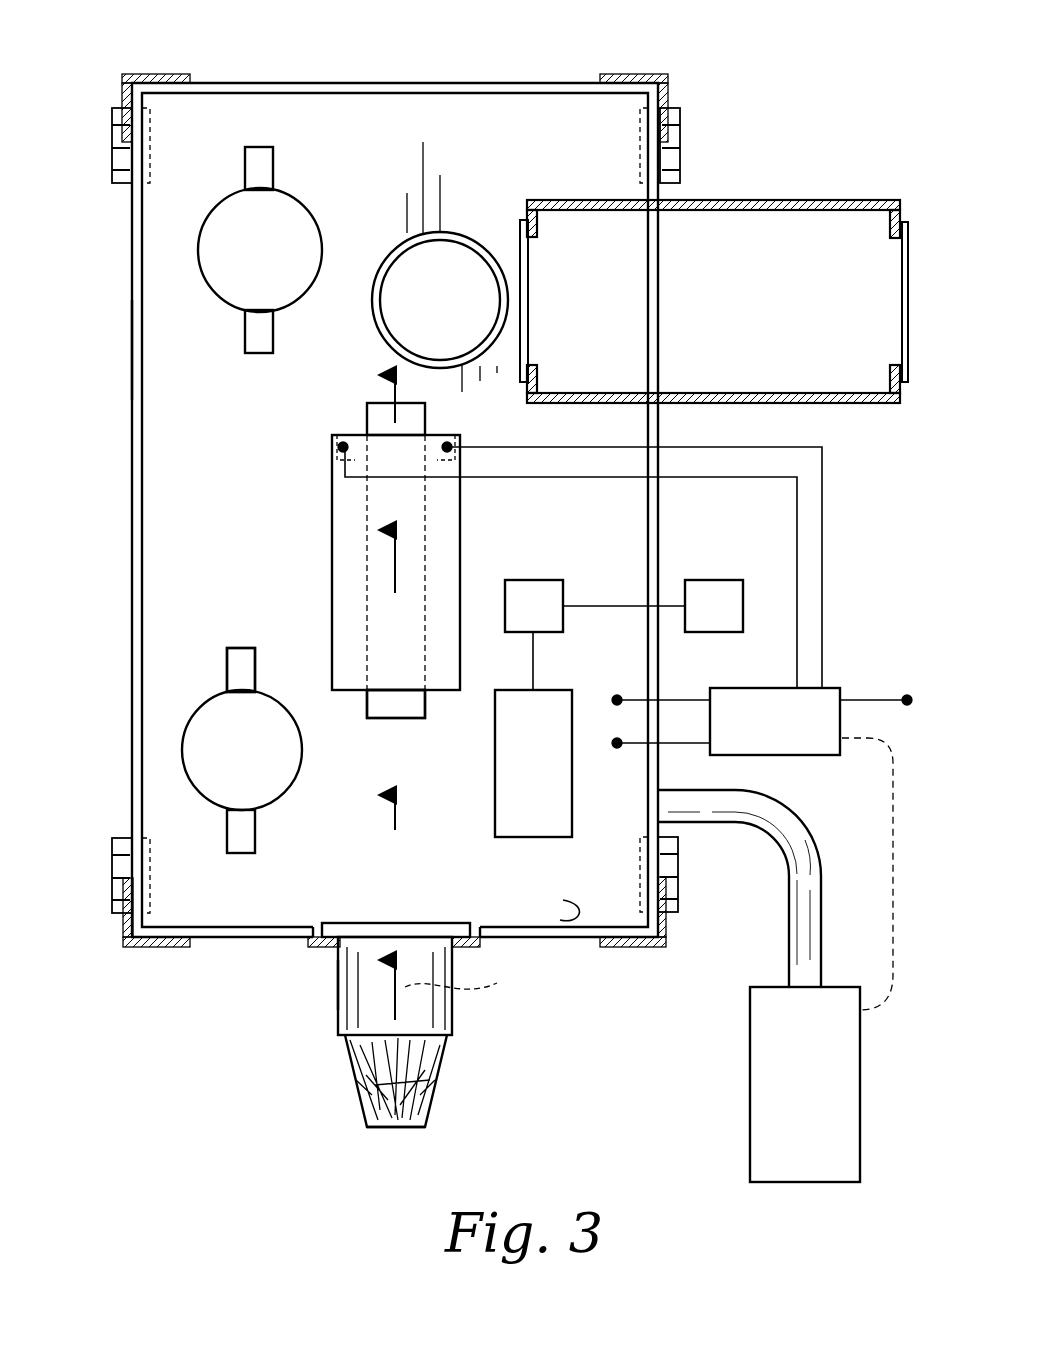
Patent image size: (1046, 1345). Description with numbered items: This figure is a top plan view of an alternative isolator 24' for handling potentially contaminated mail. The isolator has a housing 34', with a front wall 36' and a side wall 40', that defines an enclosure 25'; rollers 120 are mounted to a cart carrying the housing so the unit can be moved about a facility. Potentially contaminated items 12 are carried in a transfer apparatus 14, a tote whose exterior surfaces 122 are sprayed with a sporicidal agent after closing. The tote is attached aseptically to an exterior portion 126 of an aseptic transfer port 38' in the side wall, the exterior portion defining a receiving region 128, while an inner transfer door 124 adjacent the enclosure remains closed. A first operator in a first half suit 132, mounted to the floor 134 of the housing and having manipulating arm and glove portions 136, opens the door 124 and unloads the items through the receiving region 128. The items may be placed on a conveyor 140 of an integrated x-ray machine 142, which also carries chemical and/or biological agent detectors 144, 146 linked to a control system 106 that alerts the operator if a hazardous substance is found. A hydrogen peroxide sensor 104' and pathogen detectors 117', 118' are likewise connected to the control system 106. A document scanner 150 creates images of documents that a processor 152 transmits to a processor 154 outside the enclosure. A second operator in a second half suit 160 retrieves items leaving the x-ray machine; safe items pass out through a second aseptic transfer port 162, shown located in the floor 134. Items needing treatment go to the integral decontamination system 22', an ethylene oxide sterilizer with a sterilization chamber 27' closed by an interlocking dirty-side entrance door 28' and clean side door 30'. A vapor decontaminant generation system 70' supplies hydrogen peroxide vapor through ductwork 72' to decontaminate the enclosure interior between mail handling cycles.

The isolator 24' is at (395, 476).
The front wall 36' is at (99, 350).
The enclosure 25' is at (145, 441).
The housing 34' is at (672, 86).
The side wall 40' is at (390, 561).
The rollers 120 is at (110, 138).
The second half suit 160 is at (290, 235).
The second aseptic transfer port 162 is at (455, 285).
The first half suit 132 is at (258, 762).
The manipulating arm and glove portions 136 is at (240, 662).
The integrated x-ray machine 142 is at (332, 565).
The conveyor 140 is at (400, 702).
The chemical and/or biological agent detector 144 is at (343, 440).
The chemical and/or biological agent detector 146 is at (447, 440).
The processor 152 is at (535, 580).
The processor 154 is at (705, 580).
The document scanner 150 is at (535, 838).
The control system 106 is at (762, 688).
The detector 117' is at (641, 677).
The hydrogen peroxide sensor 104' is at (651, 776).
The detector 118' is at (876, 672).
The ductwork 72' is at (739, 888).
The vapor decontaminant generation system 70' is at (760, 1084).
The floor 134 is at (520, 905).
The decontamination system 22' is at (713, 266).
The sterilization chamber 27' is at (710, 291).
The entrance door 28' is at (563, 301).
The clean side door 30' is at (859, 302).
The inner transfer door 124 is at (378, 923).
The exterior portion 126 is at (452, 1015).
The aseptic transfer port 38' is at (292, 991).
The receiving region 128 is at (476, 984).
The transfer apparatus 14 is at (350, 1060).
The potentially contaminated items 12 is at (400, 1080).
The exterior surfaces 122 is at (360, 1110).